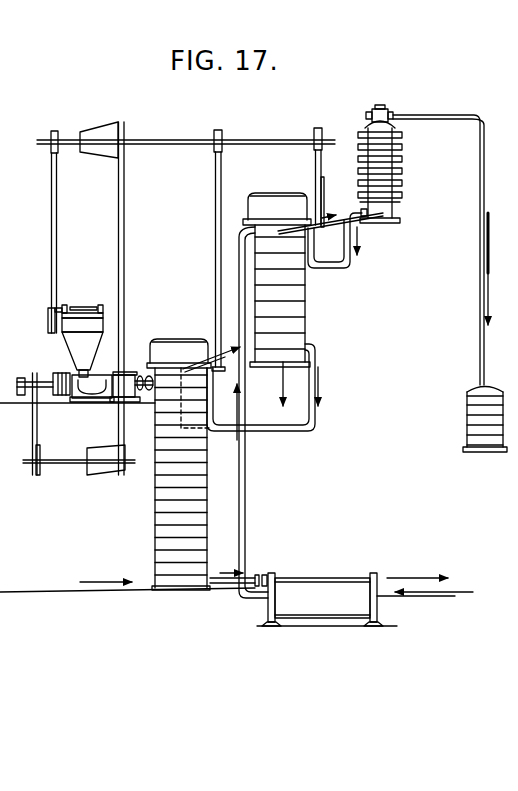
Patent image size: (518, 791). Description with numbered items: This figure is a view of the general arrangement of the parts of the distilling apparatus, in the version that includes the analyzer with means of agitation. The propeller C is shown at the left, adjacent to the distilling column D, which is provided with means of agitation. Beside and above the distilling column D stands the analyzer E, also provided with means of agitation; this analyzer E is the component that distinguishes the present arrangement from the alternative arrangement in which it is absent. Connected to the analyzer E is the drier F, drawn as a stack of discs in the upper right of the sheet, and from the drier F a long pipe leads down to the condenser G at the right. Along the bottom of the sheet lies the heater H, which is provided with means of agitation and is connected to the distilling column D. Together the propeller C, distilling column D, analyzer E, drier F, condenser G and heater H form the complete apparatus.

The propeller C is at (85, 353).
The distilling column D is at (193, 464).
The analyzer E is at (311, 395).
The drier F is at (423, 245).
The condenser G is at (473, 420).
The heater H is at (341, 589).